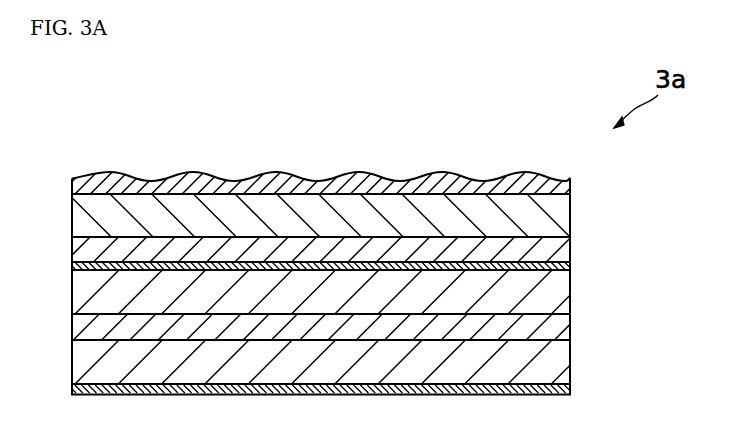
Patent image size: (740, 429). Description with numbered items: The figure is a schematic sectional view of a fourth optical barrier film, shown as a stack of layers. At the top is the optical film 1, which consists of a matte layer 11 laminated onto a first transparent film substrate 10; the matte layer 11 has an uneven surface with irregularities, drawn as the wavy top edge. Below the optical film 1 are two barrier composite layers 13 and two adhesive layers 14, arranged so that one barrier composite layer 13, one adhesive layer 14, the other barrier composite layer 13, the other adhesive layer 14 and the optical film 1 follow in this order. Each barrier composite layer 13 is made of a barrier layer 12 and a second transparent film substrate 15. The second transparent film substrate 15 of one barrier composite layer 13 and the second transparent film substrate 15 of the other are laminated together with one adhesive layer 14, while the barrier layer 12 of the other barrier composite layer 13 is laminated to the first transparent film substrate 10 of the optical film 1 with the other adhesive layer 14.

The optical film 1 is at (374, 202).
The matte layer 11 is at (572, 185).
The first transparent film substrate 10 is at (572, 215).
The adhesive layer 14 is at (572, 245).
The barrier composite layer 13 is at (381, 327).
The barrier layer 12 is at (572, 267).
The second transparent film substrate 15 is at (572, 298).